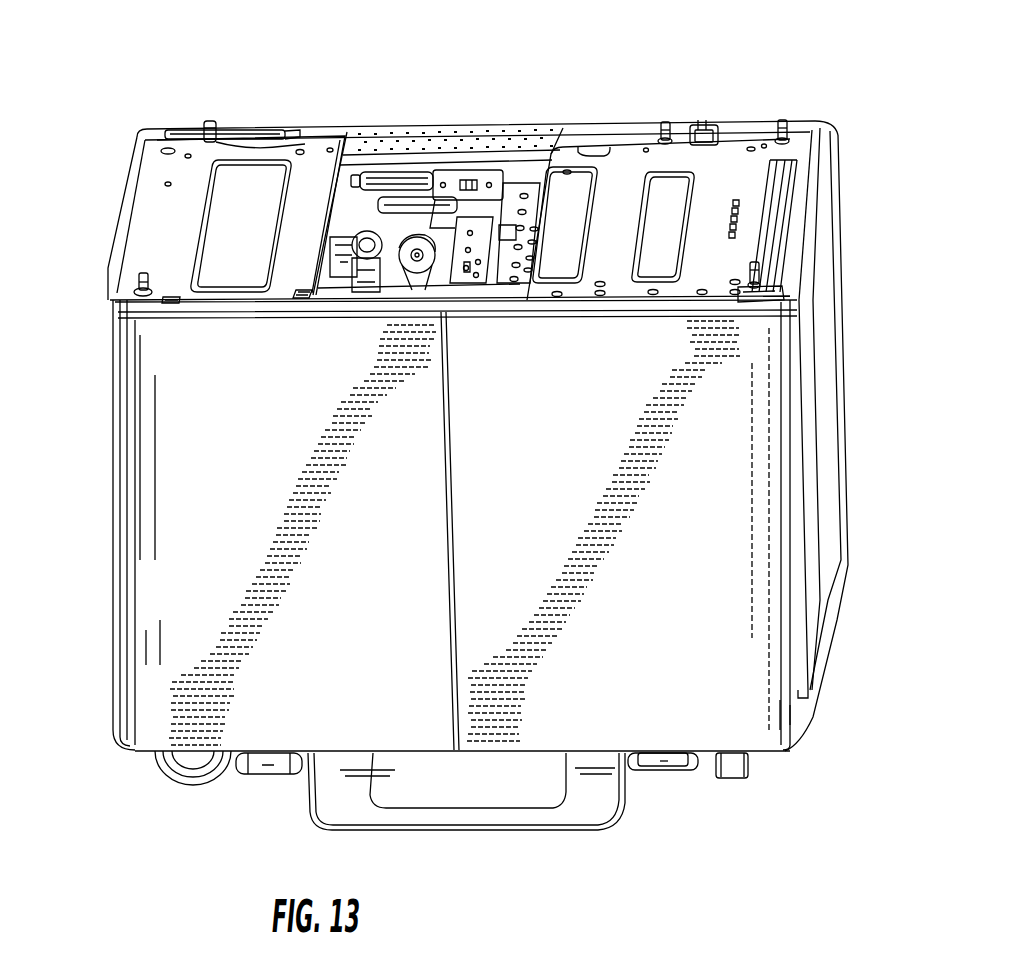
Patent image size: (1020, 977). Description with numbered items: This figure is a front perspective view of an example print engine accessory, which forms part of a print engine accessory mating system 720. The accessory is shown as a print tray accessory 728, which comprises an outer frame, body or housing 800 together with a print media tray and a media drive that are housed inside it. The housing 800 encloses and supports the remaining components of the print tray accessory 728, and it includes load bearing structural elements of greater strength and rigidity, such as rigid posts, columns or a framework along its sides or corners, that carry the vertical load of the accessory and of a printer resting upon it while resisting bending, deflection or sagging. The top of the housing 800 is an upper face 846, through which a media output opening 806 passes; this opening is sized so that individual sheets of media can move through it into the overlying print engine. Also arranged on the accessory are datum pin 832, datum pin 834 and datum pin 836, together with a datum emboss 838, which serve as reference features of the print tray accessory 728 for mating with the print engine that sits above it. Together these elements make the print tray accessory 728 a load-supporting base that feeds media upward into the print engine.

The print engine accessory mating system 720 is at (180, 72).
The print tray accessory 728 is at (108, 375).
The housing 800 is at (832, 382).
The media output opening 806 is at (377, 150).
The datum pin 832 is at (765, 287).
The datum pin 834 is at (795, 140).
The datum pin 836 is at (137, 288).
The datum emboss 838 is at (180, 138).
The upper face 846 is at (630, 162).